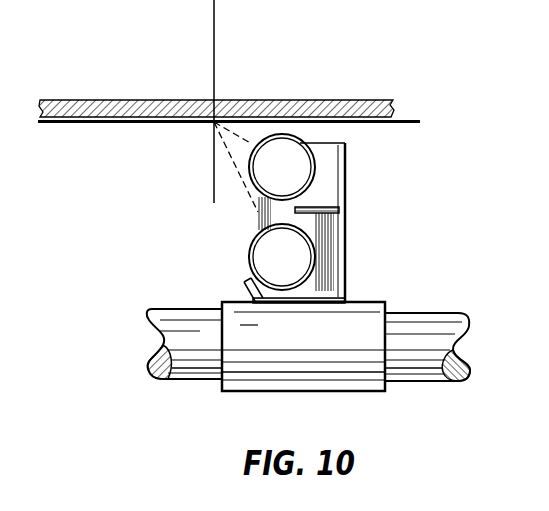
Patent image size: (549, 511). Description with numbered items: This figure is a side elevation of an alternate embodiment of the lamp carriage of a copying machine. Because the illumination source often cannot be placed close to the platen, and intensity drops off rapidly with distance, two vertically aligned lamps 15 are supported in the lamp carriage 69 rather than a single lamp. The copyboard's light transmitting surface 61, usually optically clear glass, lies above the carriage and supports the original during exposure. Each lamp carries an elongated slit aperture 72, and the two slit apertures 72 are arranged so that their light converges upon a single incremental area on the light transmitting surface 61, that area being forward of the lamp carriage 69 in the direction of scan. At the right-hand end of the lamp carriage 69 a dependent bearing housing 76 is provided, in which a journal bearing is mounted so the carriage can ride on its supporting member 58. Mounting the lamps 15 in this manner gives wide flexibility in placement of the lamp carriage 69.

The light transmitting surface 61 is at (172, 100).
The elongated slit apertures 72 is at (262, 148).
The lamps 15 is at (252, 277).
The lamp carriage 69 is at (346, 228).
The dependent bearing housing 76 is at (367, 302).
The support tube 58 is at (444, 313).